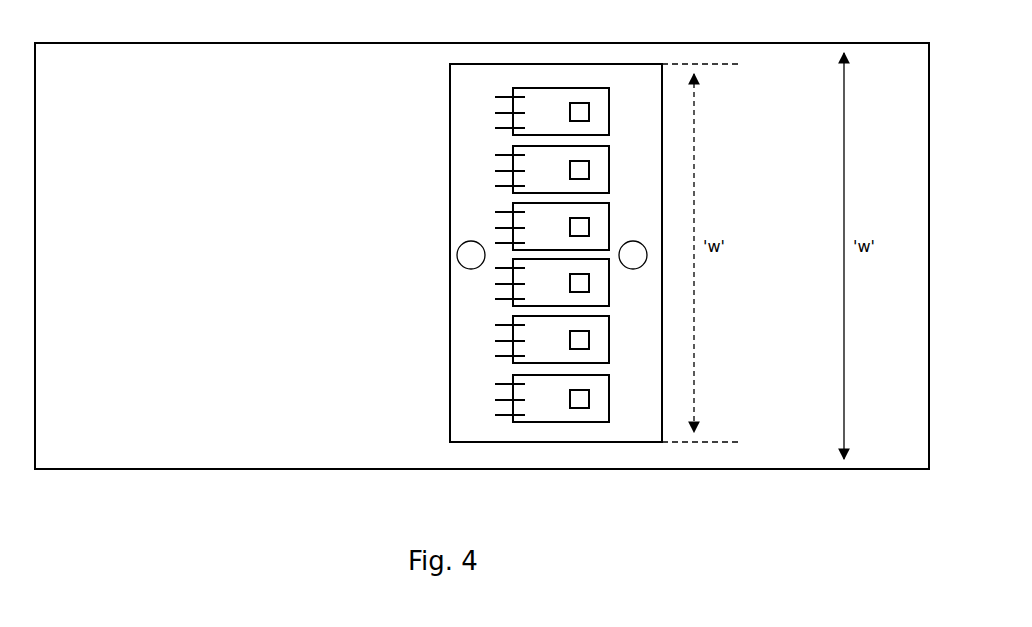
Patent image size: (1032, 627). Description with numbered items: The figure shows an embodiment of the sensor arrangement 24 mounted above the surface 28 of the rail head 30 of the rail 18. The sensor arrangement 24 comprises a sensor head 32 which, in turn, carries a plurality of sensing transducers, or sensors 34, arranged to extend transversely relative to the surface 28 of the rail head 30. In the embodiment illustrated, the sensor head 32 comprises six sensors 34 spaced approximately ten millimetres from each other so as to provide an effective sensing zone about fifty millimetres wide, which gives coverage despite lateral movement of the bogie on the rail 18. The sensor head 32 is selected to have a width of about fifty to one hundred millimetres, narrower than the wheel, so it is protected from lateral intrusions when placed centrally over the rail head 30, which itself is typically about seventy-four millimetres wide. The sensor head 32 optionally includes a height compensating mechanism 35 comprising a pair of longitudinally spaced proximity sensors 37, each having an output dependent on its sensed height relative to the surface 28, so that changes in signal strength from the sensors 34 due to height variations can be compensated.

The rail 18 is at (752, 516).
The sensor arrangement 24 is at (426, 411).
The surface 28 is at (200, 315).
The rail head 30 is at (225, 448).
The sensor head 32 is at (448, 190).
The sensors 34 is at (611, 110).
The height compensating mechanism 35 is at (460, 300).
The proximity sensors 37 is at (452, 266).